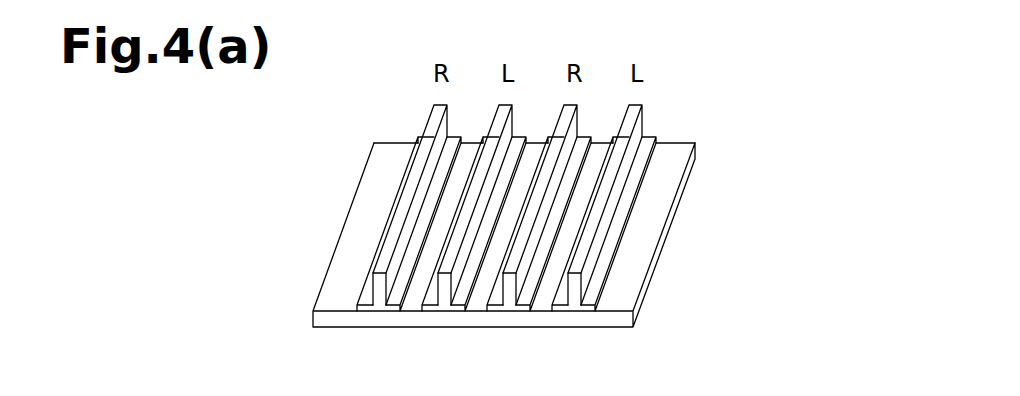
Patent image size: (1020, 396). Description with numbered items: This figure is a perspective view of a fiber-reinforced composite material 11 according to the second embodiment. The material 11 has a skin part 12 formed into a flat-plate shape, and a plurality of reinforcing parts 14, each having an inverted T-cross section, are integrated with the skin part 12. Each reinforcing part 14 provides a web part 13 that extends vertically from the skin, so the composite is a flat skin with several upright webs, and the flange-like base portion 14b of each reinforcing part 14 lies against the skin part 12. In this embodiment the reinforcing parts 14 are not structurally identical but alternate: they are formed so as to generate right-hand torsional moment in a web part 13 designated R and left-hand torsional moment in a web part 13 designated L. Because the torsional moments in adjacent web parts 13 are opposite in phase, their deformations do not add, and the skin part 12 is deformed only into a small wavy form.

The fiber-reinforced composite material 11 is at (707, 62).
The skin part 12 is at (647, 248).
The web part 13 is at (445, 294).
The reinforcing part 14 is at (422, 104).
The ledge portion 14b is at (454, 136).